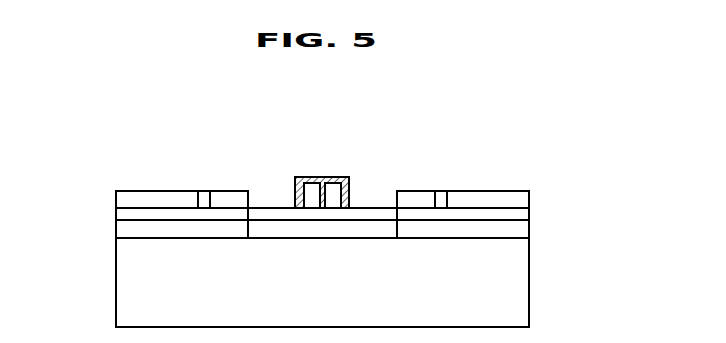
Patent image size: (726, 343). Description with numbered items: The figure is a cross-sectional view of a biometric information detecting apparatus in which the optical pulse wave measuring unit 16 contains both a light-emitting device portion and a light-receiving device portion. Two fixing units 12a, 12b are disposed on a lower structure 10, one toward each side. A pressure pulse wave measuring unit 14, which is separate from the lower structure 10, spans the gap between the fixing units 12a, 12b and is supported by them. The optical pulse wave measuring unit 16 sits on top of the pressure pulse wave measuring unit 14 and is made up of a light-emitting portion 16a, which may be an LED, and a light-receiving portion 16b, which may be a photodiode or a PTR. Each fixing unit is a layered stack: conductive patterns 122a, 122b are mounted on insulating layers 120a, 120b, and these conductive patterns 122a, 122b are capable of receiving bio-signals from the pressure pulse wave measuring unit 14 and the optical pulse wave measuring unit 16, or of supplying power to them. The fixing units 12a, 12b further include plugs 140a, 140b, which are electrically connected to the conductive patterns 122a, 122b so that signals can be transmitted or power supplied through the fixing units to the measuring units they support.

The lower structure 10 is at (517, 292).
The fixing unit 12a is at (118, 197).
The conductive pattern 122a is at (118, 211).
The insulating layer 120a is at (118, 226).
The fixing unit 12b is at (518, 200).
The conductive pattern 122b is at (524, 214).
The insulating layer 120b is at (522, 228).
The pressure pulse wave measuring unit 14 is at (274, 211).
The plug 140a is at (205, 193).
The plug 140b is at (440, 193).
The optical pulse wave measuring unit 16 is at (352, 195).
The light-emitting portion 16a is at (310, 188).
The light-receiving portion 16b is at (335, 188).